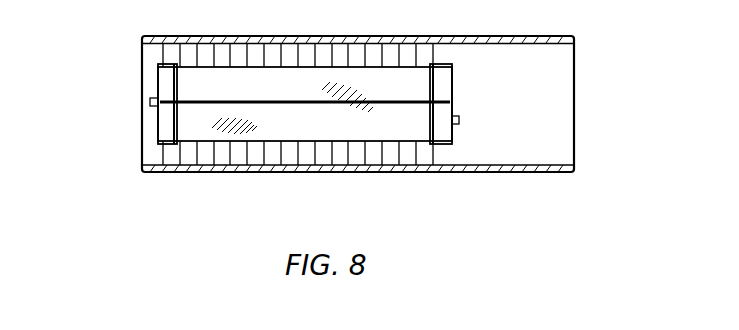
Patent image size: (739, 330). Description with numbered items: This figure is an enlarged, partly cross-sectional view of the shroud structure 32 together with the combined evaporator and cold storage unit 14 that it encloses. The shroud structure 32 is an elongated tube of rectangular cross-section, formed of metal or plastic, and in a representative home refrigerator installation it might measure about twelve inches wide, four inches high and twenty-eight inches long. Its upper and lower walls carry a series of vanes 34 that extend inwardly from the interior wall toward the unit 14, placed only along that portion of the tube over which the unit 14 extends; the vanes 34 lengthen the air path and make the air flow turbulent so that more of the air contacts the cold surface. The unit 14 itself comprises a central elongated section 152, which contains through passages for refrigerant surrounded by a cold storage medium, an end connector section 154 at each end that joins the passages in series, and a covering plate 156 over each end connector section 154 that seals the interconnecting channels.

The combined evaporator and cold storage unit 14 is at (453, 75).
The shroud structure 32 is at (498, 172).
The vanes 34 is at (300, 50).
The central elongated section 152 is at (283, 126).
The end connector section 154 is at (167, 122).
The covering plate 156 is at (160, 115).